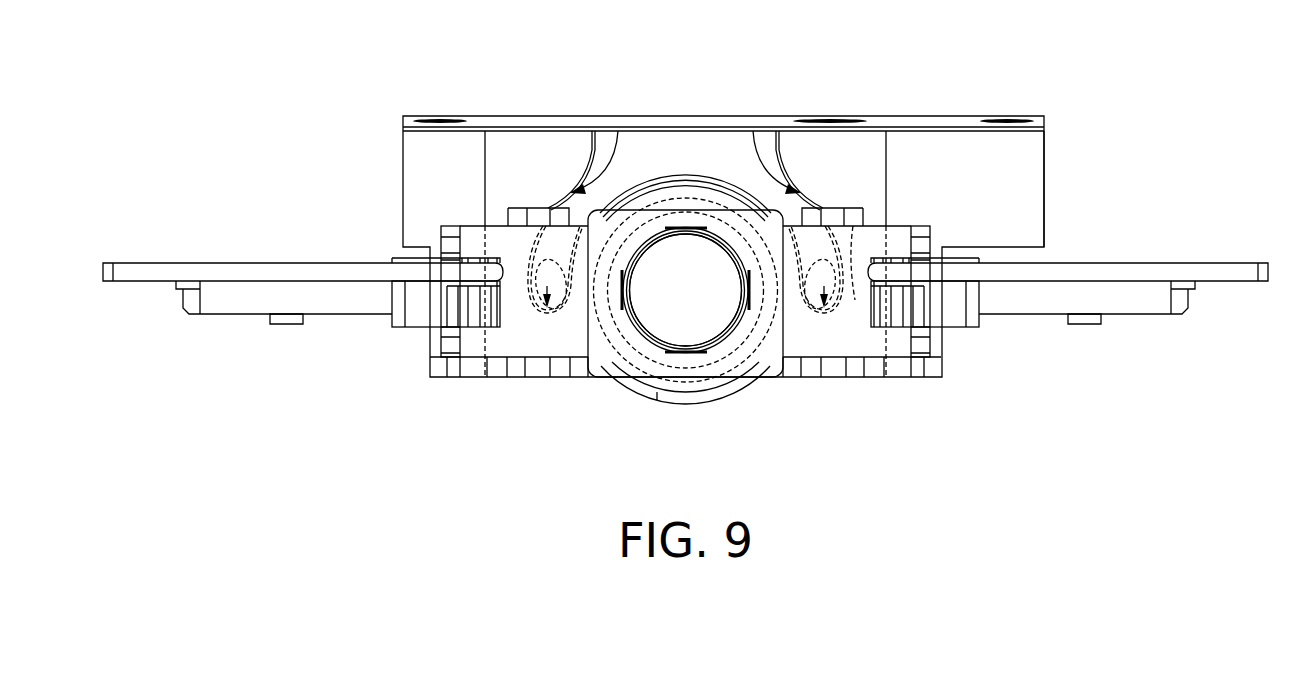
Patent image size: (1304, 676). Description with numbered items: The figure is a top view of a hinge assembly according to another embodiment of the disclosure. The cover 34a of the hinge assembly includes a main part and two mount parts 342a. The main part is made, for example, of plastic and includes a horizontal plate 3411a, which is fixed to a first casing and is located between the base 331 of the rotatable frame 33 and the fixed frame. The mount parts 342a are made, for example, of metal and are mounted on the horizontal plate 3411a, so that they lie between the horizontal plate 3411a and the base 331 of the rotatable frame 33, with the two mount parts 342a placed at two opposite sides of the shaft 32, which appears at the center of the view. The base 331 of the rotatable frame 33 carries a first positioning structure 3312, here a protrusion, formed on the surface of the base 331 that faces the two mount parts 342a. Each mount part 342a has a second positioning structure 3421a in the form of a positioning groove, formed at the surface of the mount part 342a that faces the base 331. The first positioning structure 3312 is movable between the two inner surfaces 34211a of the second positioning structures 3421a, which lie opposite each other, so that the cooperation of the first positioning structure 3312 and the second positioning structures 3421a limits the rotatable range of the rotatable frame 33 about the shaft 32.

The shaft 32 is at (672, 230).
The rotatable frame 33 is at (1117, 330).
The base 331 is at (692, 362).
The first positioning structure 3312 is at (855, 300).
The cover 34a is at (948, 110).
The horizontal plate 3411a is at (1017, 172).
The mount part 342a is at (537, 148).
The second positioning structure 3421a is at (618, 131).
The inner surface 34211a is at (591, 226).